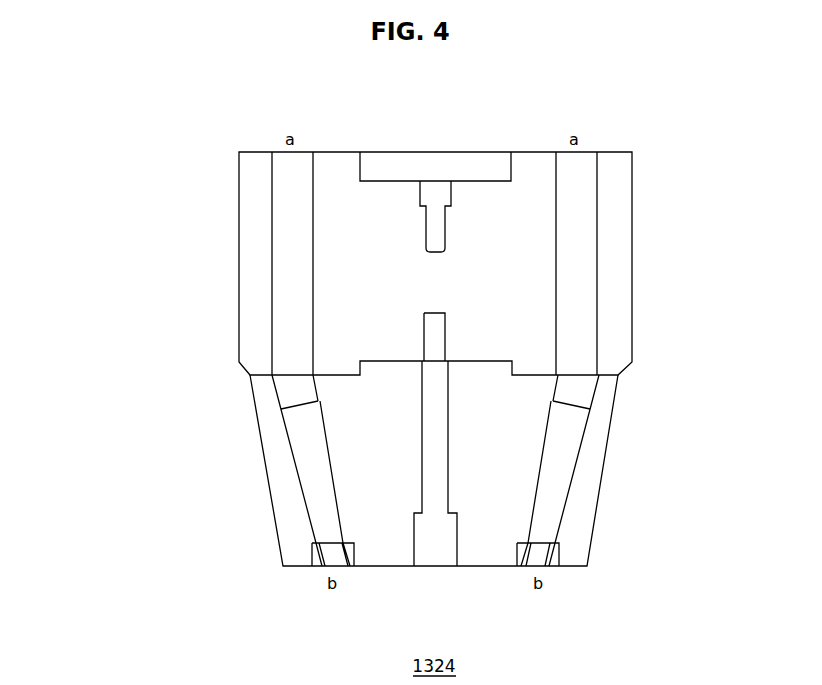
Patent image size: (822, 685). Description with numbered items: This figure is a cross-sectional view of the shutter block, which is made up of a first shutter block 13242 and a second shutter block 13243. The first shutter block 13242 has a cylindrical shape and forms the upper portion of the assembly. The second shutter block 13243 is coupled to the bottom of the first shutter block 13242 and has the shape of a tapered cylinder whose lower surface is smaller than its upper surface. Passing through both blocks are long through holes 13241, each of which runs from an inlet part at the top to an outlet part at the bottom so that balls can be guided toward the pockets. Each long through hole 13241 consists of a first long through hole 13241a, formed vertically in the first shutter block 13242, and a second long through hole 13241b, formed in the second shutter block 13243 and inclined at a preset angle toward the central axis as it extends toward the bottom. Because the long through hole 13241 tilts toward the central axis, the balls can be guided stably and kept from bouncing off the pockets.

The long through hole 13241 is at (187, 359).
The first long through hole 13241a is at (290, 348).
The second long through hole 13241b is at (295, 421).
The first shutter block 13242 is at (632, 273).
The second shutter block 13243 is at (610, 472).